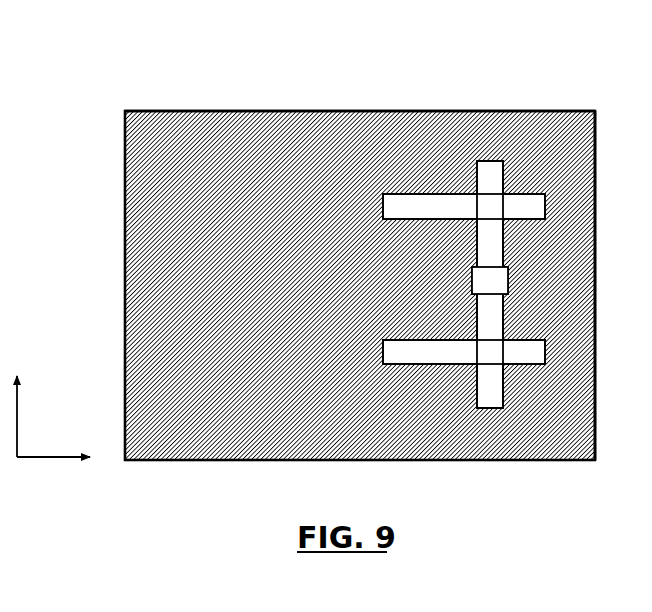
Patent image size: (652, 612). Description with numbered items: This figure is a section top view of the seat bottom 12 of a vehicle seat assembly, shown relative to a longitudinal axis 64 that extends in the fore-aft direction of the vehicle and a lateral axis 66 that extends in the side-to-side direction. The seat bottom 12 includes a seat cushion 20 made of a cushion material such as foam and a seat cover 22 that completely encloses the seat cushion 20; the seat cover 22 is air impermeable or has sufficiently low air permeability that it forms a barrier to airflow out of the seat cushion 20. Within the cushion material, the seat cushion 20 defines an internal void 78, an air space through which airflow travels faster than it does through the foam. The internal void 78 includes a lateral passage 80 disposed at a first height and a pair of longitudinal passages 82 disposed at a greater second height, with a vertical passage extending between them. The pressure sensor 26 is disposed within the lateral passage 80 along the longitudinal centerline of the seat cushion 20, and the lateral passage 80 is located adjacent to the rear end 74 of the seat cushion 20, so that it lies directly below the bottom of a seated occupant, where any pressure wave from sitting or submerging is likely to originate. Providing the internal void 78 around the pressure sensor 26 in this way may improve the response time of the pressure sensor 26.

The seat bottom 12 is at (373, 274).
The seat cushion 20 is at (253, 133).
The seat cover 22 is at (312, 111).
The pressure sensor 26 is at (505, 279).
The longitudinal axis 64 is at (52, 457).
The lateral axis 66 is at (17, 412).
The rear end 74 is at (596, 432).
The internal void 78 is at (458, 178).
The lateral passage 80 is at (495, 317).
The longitudinal passages 82 is at (395, 183).